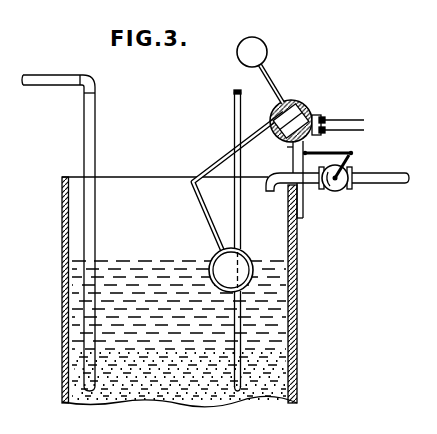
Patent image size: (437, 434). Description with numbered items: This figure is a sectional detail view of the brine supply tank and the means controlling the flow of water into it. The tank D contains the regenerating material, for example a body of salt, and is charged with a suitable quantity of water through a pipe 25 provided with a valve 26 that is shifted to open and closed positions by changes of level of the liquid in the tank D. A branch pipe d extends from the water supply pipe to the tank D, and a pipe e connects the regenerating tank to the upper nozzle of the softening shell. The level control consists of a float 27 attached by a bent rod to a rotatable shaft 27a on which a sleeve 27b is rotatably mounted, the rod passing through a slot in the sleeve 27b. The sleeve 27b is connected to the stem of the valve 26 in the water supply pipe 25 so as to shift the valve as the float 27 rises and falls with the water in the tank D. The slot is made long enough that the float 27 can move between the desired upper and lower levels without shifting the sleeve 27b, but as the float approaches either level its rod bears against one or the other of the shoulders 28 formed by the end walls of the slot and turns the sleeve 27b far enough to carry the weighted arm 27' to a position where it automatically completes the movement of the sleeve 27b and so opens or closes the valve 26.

The tank D is at (296, 307).
The pipe e is at (87, 132).
The branch pipe d is at (234, 102).
The float 27 is at (279, 269).
The weighted arm 27' is at (278, 70).
The rotatable shaft 27a is at (313, 109).
The sleeve 27b is at (300, 108).
The shoulders 28 is at (304, 179).
The valve 26 is at (338, 192).
The pipe 25 is at (383, 184).